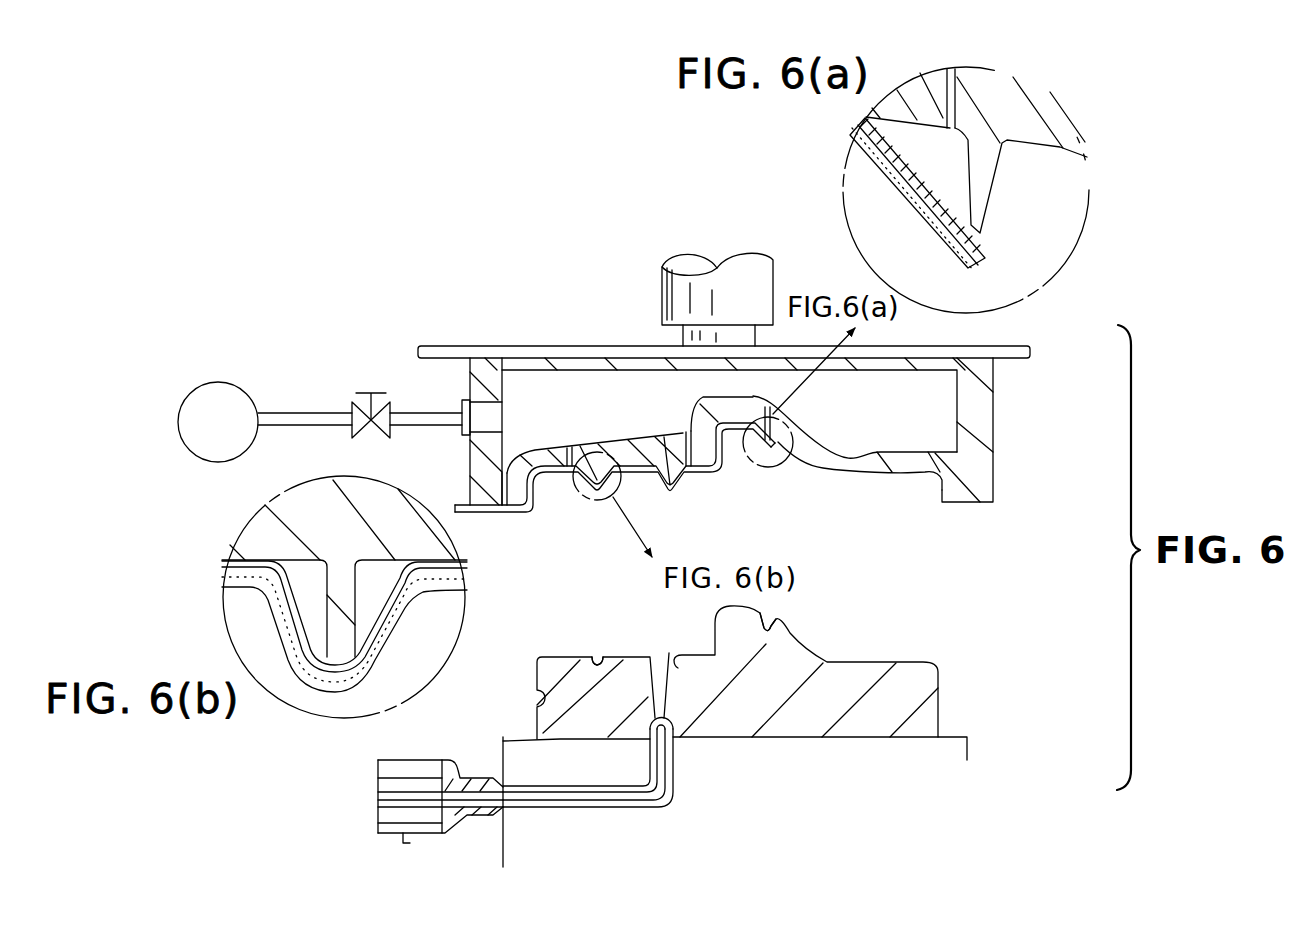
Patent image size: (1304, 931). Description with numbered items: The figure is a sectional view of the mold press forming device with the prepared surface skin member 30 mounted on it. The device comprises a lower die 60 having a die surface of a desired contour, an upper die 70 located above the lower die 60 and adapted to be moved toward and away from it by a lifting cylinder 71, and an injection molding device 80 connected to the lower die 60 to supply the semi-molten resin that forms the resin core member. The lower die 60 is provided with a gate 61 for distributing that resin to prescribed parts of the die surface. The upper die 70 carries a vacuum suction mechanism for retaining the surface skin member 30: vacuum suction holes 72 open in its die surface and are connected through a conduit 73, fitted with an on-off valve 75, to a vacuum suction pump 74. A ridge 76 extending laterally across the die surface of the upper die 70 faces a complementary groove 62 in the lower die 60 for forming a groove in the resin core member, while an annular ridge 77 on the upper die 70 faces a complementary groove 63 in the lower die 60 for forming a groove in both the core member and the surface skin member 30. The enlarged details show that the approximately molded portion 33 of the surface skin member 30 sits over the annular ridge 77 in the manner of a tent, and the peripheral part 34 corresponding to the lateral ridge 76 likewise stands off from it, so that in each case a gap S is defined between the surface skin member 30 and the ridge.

In FIG. 6, the surface skin member 30 is at (718, 480).
In FIG. 6, the approximately molded portion 33 is at (591, 499).
In FIG. 6b, the approximately molded portion 33 is at (307, 678).
In FIG. 6, the peripheral part 34 is at (760, 462).
In FIG. 6a, the peripheral part 34 is at (930, 212).
In FIG. 6, the lower die 60 is at (917, 678).
In FIG. 6, the gate 61 is at (663, 693).
In FIG. 6, the complementary groove 62 is at (769, 627).
In FIG. 6, the complementary groove 63 is at (683, 655).
In FIG. 6, the upper die 70 is at (977, 410).
In FIG. 6, the lifting cylinder 71 is at (687, 295).
In FIG. 6, the vacuum suction holes 72 is at (677, 430).
In FIG. 6, the conduit 73 is at (302, 413).
In FIG. 6, the vacuum suction pump 74 is at (213, 443).
In FIG. 6, the on-off valve 75 is at (369, 394).
In FIG. 6a, the ridge 76 is at (985, 193).
In FIG. 6b, the annular ridge 77 is at (333, 633).
In FIG. 6, the injection molding device 80 is at (407, 843).
In FIG. 6a, the gap S is at (932, 145).
In FIG. 6b, the gap S is at (373, 578).